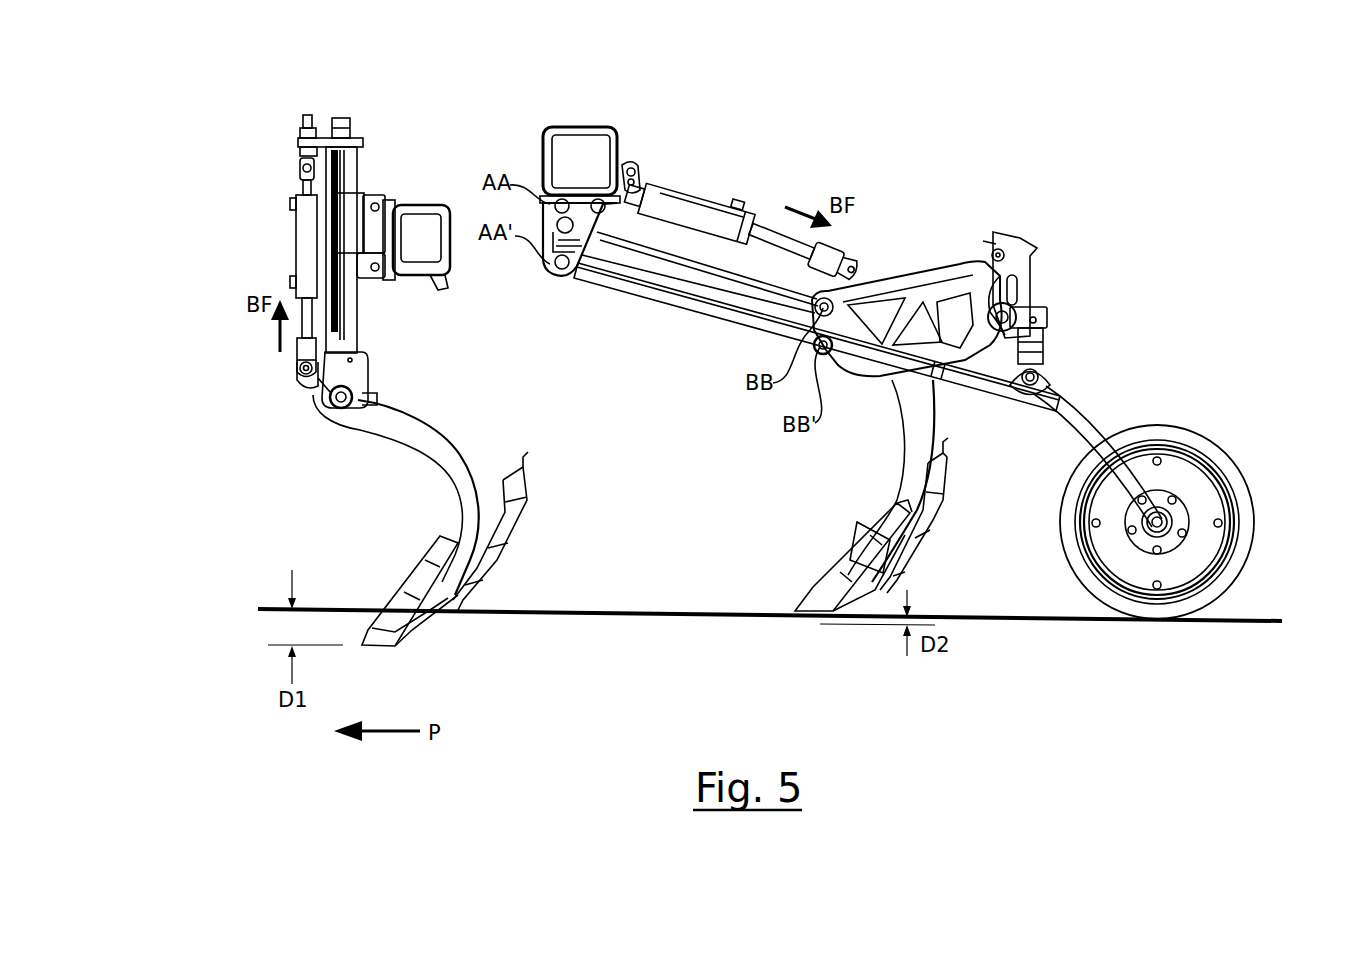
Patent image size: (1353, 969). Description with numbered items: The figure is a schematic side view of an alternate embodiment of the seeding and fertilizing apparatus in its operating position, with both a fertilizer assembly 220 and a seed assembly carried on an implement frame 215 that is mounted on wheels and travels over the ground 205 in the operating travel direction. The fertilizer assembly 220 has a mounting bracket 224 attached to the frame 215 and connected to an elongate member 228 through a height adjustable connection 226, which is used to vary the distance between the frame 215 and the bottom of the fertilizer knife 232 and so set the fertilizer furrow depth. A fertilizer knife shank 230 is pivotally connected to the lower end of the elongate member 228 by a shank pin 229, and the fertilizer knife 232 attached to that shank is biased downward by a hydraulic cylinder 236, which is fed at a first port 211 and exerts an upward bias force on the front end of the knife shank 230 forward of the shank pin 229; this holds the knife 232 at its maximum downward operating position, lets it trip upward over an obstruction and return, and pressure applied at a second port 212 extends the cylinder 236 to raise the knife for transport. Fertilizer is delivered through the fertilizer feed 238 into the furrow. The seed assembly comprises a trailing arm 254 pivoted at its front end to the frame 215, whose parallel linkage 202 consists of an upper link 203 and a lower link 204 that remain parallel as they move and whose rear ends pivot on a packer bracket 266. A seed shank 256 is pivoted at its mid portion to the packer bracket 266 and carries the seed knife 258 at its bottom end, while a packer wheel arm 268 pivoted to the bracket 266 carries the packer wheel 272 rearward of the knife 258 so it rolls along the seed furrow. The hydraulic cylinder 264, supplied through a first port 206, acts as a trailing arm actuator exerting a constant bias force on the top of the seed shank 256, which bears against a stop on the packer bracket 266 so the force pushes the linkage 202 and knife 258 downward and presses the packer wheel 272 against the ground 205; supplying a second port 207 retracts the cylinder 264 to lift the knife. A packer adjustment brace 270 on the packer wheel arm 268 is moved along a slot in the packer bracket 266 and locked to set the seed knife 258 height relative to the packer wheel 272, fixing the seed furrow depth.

The parallel linkage 202 is at (668, 200).
The upper link 203 is at (712, 282).
The lower link 204 is at (643, 300).
The ground 205 is at (600, 612).
The first port 206 is at (660, 178).
The second port 207 is at (740, 205).
The first port 211 is at (296, 282).
The second port 212 is at (296, 205).
The implement frame 215 is at (580, 133).
The fertilizer assembly 220 is at (282, 124).
The mounting bracket 224 is at (398, 290).
The height adjustable connection 226 is at (360, 192).
The elongate member 228 is at (358, 168).
The shank pin 229 is at (328, 393).
The fertilizer knife shank 230 is at (303, 387).
The fertilizer knife 232 is at (390, 597).
The hydraulic cylinder 236 is at (296, 242).
The fertilizer feed 238 is at (510, 533).
The trailing arm 254 is at (595, 295).
The seed shank 256 is at (897, 478).
The seed knife 258 is at (803, 600).
The hydraulic cylinder 264 is at (715, 190).
The packer bracket 266 is at (930, 280).
The packer wheel arm 268 is at (1090, 407).
The packer adjustment brace 270 is at (1050, 313).
The packer wheel 272 is at (1222, 448).